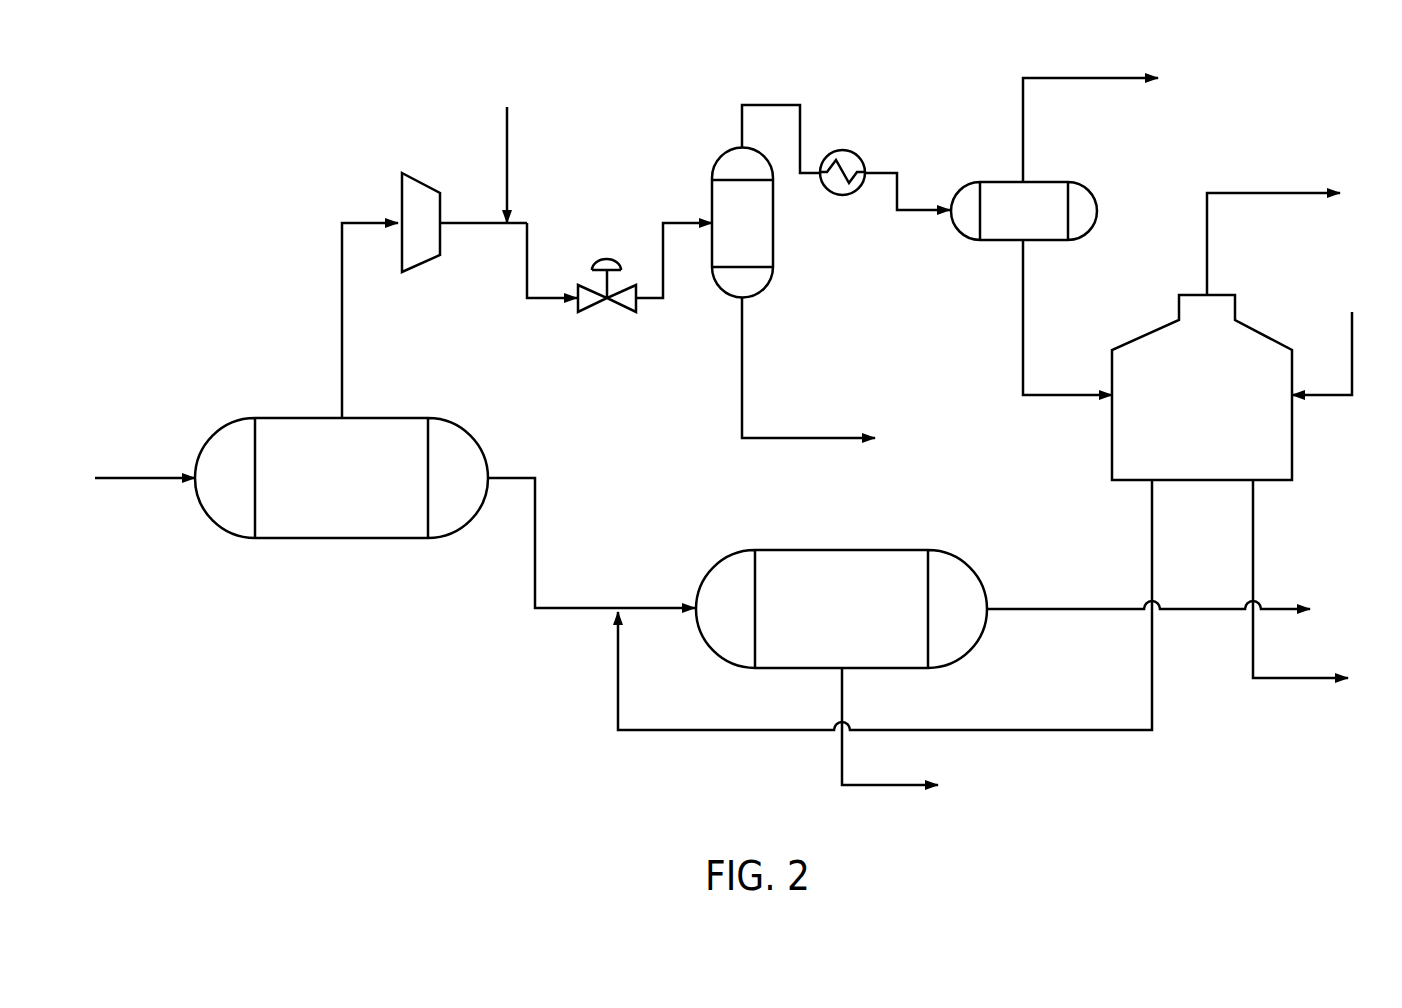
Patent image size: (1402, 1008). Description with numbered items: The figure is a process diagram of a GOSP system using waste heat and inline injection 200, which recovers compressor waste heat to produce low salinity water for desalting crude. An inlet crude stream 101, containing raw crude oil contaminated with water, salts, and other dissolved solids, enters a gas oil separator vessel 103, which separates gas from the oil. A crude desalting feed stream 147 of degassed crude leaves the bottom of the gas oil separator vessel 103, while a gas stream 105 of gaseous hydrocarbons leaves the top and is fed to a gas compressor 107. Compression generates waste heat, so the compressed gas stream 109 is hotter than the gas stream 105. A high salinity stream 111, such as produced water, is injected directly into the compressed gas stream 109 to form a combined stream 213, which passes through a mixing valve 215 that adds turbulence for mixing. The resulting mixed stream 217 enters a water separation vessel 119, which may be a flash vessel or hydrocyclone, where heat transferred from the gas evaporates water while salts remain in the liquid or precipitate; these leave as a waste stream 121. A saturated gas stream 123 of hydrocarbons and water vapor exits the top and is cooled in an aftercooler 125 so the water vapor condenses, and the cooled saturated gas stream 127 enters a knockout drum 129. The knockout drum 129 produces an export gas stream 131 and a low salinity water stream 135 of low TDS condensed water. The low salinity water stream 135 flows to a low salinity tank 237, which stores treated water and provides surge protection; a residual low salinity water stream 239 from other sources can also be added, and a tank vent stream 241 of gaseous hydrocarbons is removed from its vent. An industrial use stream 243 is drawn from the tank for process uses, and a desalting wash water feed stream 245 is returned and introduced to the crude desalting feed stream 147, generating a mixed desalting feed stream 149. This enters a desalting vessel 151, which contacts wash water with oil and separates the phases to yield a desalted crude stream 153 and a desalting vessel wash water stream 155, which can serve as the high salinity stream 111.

The GOSP system using waste heat and inline injection 200 is at (246, 68).
The inlet crude stream 101 is at (157, 478).
The gas oil separator vessel 103 is at (302, 418).
The gas stream 105 is at (342, 317).
The gas compressor 107 is at (398, 193).
The compressed gas stream 109 is at (482, 225).
The high salinity stream 111 is at (507, 137).
The combined stream 213 is at (548, 300).
The mixing valve 215 is at (593, 305).
The mixed stream 217 is at (685, 220).
The water separation vessel 119 is at (773, 245).
The waste stream 121 is at (743, 382).
The saturated gas stream 123 is at (742, 120).
The aftercooler 125 is at (843, 150).
The cooled saturated gas stream 127 is at (888, 170).
The knockout drum 129 is at (1047, 180).
The export gas stream 131 is at (1085, 78).
The low salinity water stream 135 is at (1022, 307).
The low salinity tank 237 is at (1112, 433).
The residual low salinity water stream 239 is at (1352, 327).
The tank vent stream 241 is at (1253, 193).
The industrial use stream 243 is at (1297, 678).
The crude desalting feed stream 147 is at (535, 518).
The mixed desalting feed stream 149 is at (655, 607).
The desalting vessel 151 is at (802, 548).
The desalted crude stream 153 is at (1037, 609).
The desalting vessel wash water stream 155 is at (840, 700).
The desalting wash water feed stream 245 is at (617, 680).